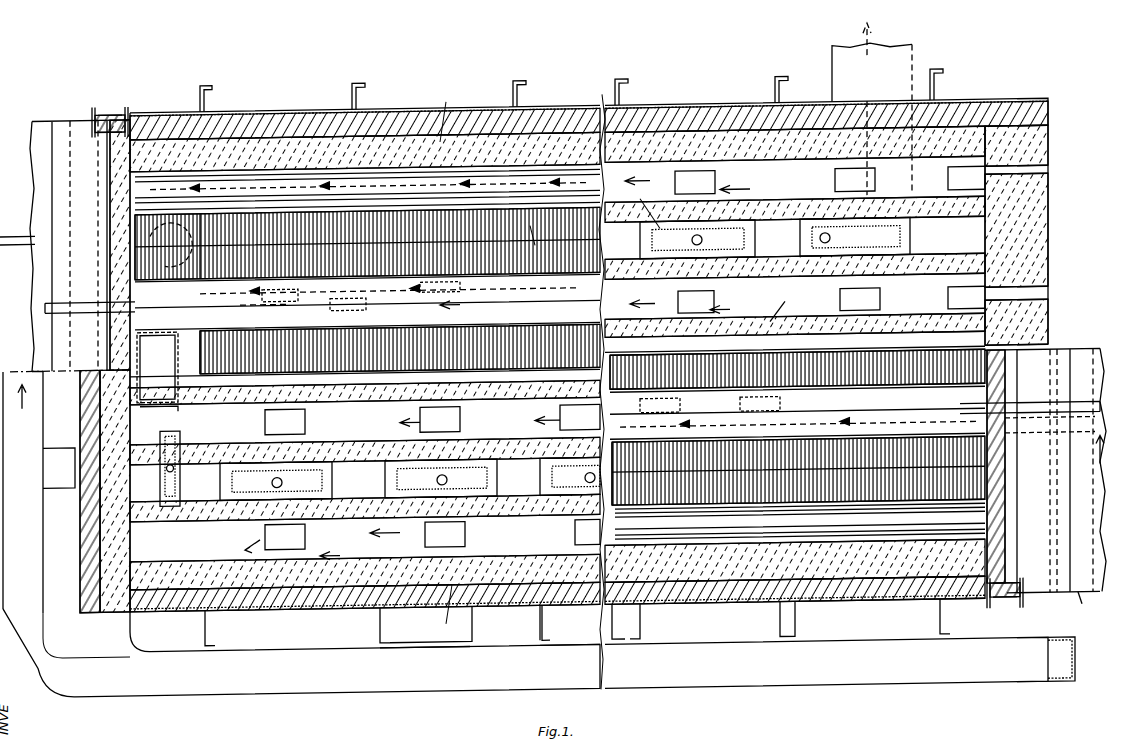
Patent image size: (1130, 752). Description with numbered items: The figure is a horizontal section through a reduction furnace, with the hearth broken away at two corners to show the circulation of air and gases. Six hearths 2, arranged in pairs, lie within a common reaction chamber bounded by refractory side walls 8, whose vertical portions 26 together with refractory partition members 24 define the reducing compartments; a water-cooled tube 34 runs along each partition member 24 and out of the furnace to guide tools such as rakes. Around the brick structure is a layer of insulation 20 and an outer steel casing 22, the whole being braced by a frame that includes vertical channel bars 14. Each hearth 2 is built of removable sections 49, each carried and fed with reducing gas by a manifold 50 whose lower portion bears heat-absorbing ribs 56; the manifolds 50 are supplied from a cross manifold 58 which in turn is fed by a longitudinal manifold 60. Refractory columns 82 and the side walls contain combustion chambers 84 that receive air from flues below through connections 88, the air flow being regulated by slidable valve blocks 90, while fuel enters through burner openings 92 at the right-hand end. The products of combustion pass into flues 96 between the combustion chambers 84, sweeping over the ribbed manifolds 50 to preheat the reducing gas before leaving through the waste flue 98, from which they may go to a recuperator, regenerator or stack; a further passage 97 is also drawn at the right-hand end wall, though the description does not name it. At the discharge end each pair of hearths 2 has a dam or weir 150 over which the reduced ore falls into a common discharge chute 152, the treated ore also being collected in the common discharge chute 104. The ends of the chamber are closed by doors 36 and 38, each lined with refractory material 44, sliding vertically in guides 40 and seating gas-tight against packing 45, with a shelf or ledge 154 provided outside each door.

The hearths 2 is at (557, 355).
The side walls 8 is at (446, 363).
The vertical channel bars 14 is at (212, 100).
The layer of insulation 20 is at (733, 112).
The steel casing 22 is at (428, 114).
The partition members 24 is at (560, 357).
The vertical portions of the side walls 26 is at (528, 222).
The tube 34 is at (355, 306).
The door 36 is at (110, 352).
The door 38 is at (1015, 563).
The guides 40 is at (105, 112).
The refractory material 44 is at (112, 297).
The packing 45 is at (122, 114).
The removable sections 49 is at (538, 300).
The manifold 50 is at (560, 455).
The heat-absorbing ribs 56 is at (332, 455).
The cross manifold 58 is at (60, 488).
The longitudinal manifold 60 is at (312, 692).
The refractory columns 82 is at (385, 402).
The combustion chambers 84 is at (512, 355).
The connections 88 is at (342, 418).
The valve blocks 90 is at (539, 371).
The burner openings 92 is at (1050, 298).
The flues 96 is at (505, 371).
The passage 97 is at (1050, 175).
The waste flue 98 is at (914, 56).
The common discharge chute 104 is at (157, 367).
The dam or weir 150 is at (261, 304).
The common discharge chute 152 is at (159, 408).
The shelf or ledge 154 is at (1096, 601).